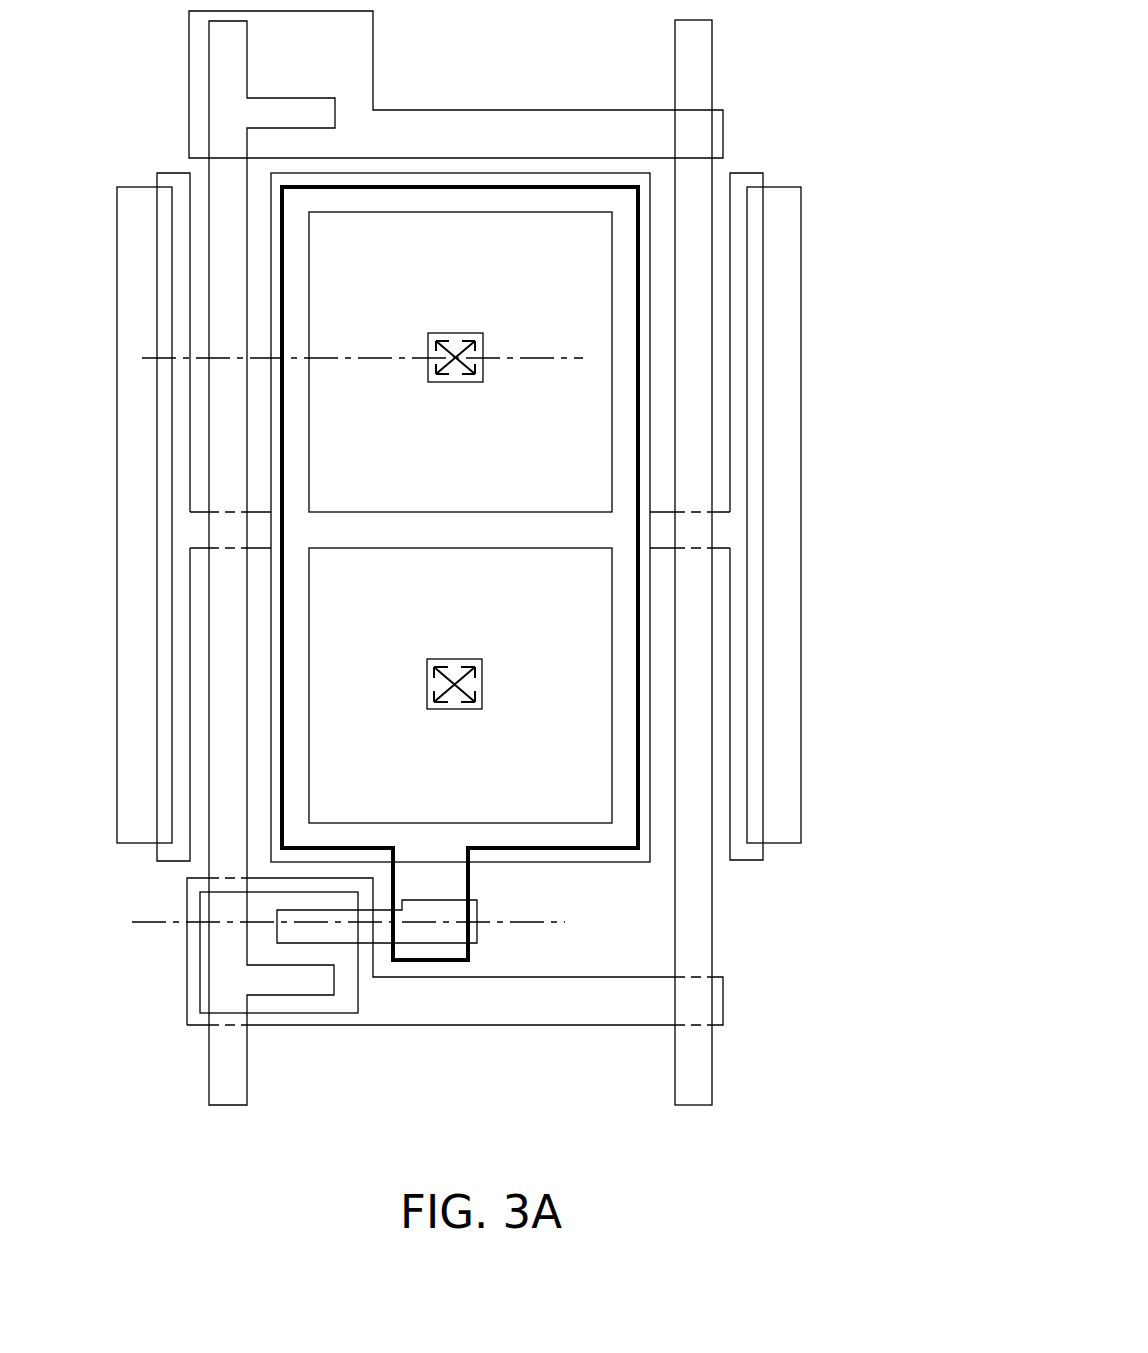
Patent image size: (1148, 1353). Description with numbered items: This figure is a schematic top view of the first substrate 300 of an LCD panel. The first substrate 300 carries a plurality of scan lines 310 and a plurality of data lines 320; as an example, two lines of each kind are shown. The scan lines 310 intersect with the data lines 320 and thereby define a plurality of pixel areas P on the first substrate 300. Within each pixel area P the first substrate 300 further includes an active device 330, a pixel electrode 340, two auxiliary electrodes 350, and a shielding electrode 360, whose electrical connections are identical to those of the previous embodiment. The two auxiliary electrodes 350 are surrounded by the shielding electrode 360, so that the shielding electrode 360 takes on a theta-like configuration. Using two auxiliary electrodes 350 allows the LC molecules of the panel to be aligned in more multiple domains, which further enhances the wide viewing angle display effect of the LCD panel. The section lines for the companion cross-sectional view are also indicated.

The first substrate 300 is at (506, 653).
The scan line 310 is at (617, 995).
The data line 320 is at (218, 1049).
The active device 330 is at (280, 1013).
The pixel electrode 340 is at (640, 573).
The auxiliary electrode 350 is at (483, 377).
The shielding electrode 360 is at (651, 215).
The pixel area P is at (590, 775).